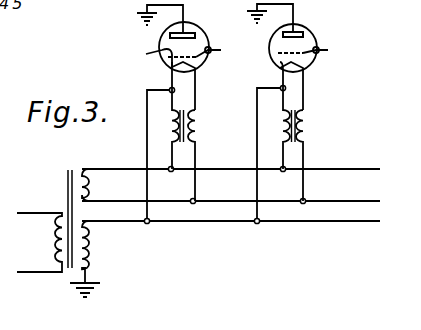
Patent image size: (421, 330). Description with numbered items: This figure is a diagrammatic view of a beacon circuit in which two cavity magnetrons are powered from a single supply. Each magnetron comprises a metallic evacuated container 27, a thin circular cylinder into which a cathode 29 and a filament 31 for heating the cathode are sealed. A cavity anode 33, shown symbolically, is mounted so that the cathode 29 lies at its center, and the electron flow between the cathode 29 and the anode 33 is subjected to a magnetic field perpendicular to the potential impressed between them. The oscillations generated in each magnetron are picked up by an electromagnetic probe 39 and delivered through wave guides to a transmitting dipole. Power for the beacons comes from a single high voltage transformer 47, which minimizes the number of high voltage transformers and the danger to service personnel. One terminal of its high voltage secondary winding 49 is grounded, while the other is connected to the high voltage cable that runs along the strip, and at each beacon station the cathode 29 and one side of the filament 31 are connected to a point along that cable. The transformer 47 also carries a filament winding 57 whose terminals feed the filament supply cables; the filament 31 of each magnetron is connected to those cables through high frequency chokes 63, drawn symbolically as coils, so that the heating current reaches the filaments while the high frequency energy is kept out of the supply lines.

The metallic evacuated container 27 is at (196, 29).
The cavity anode 33 is at (170, 36).
The electromagnetic probe 39 is at (248, 47).
The cathode 29 is at (200, 68).
The filament 31 is at (204, 65).
The high frequency chokes 63 is at (199, 127).
The filament winding 57 is at (92, 186).
The high voltage secondary winding 49 is at (94, 251).
The high voltage transformer 47 is at (62, 308).